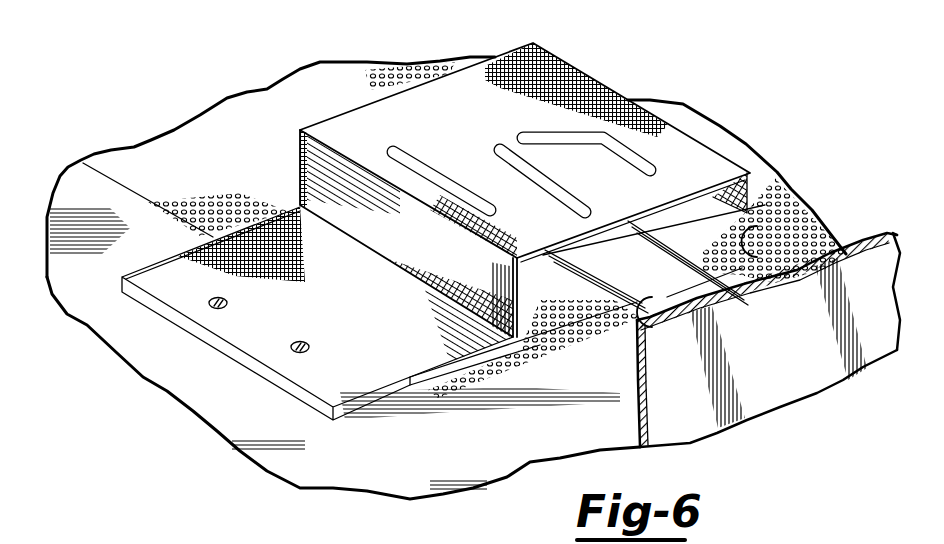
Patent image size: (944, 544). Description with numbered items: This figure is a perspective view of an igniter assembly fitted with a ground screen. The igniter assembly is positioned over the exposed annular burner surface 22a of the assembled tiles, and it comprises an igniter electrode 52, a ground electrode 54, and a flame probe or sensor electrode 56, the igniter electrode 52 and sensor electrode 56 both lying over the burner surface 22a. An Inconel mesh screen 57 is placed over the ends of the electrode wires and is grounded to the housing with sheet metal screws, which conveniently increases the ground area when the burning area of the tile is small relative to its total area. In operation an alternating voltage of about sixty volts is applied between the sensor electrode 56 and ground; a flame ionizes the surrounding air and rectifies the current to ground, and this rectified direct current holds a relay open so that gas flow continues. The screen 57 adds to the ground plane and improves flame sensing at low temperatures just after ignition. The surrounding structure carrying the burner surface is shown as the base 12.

The substrate / base member 12 is at (68, 180).
The annular burner surface 22a is at (237, 115).
The igniter electrode 52 is at (653, 167).
The ground electrode 54 is at (500, 152).
The flame probe or sensor electrode 56 is at (410, 162).
The mesh screen 57 is at (578, 72).